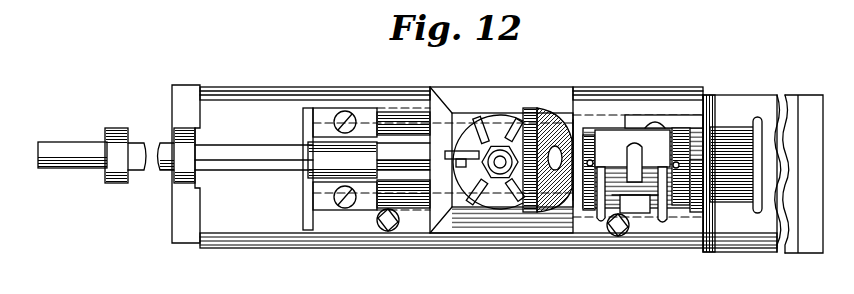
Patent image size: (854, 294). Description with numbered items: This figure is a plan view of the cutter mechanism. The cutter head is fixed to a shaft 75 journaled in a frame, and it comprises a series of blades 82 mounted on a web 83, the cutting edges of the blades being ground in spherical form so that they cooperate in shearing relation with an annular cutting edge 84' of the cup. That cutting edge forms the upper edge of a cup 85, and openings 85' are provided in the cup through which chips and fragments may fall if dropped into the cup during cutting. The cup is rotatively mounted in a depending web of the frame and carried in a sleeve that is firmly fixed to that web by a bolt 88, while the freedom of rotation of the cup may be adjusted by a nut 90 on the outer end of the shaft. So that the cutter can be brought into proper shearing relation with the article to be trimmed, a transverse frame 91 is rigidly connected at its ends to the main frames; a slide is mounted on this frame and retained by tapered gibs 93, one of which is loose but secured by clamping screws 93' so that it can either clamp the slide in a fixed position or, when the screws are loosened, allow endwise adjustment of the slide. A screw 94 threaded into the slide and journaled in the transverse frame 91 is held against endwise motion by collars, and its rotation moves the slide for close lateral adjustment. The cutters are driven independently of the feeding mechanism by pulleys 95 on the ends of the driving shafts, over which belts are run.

The shaft 75 is at (500, 160).
The blades 82 is at (485, 110).
The web 83 is at (503, 190).
The threaded collar 84' is at (543, 132).
The cup 85 is at (581, 130).
The openings 85' is at (550, 204).
The bolt 88 is at (638, 212).
The nut 90 is at (703, 152).
The transverse frame 91 is at (247, 223).
The tapered gibs 93 is at (366, 201).
The clamping screws 93' is at (500, 246).
The screw 94 is at (250, 160).
The pulleys 95 is at (742, 145).